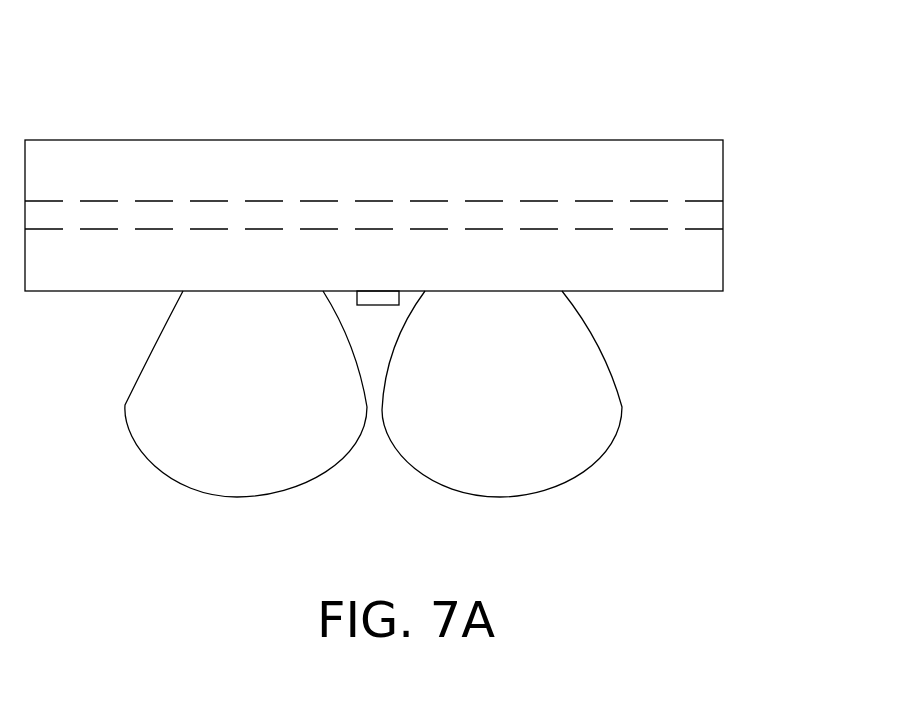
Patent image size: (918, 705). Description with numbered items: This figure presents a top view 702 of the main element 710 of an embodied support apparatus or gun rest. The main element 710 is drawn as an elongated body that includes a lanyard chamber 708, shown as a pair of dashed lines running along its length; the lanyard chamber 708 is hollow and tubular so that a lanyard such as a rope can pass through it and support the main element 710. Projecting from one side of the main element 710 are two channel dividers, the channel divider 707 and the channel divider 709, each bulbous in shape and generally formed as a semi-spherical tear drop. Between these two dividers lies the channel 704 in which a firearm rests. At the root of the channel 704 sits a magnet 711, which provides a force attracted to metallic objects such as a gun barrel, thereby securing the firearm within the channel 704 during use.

The top view 702 is at (345, 86).
The channel 704 is at (373, 338).
The channel divider 707 is at (329, 481).
The lanyard chamber 708 is at (733, 216).
The channel divider 709 is at (623, 443).
The main element 710 is at (528, 132).
The magnet 711 is at (400, 306).